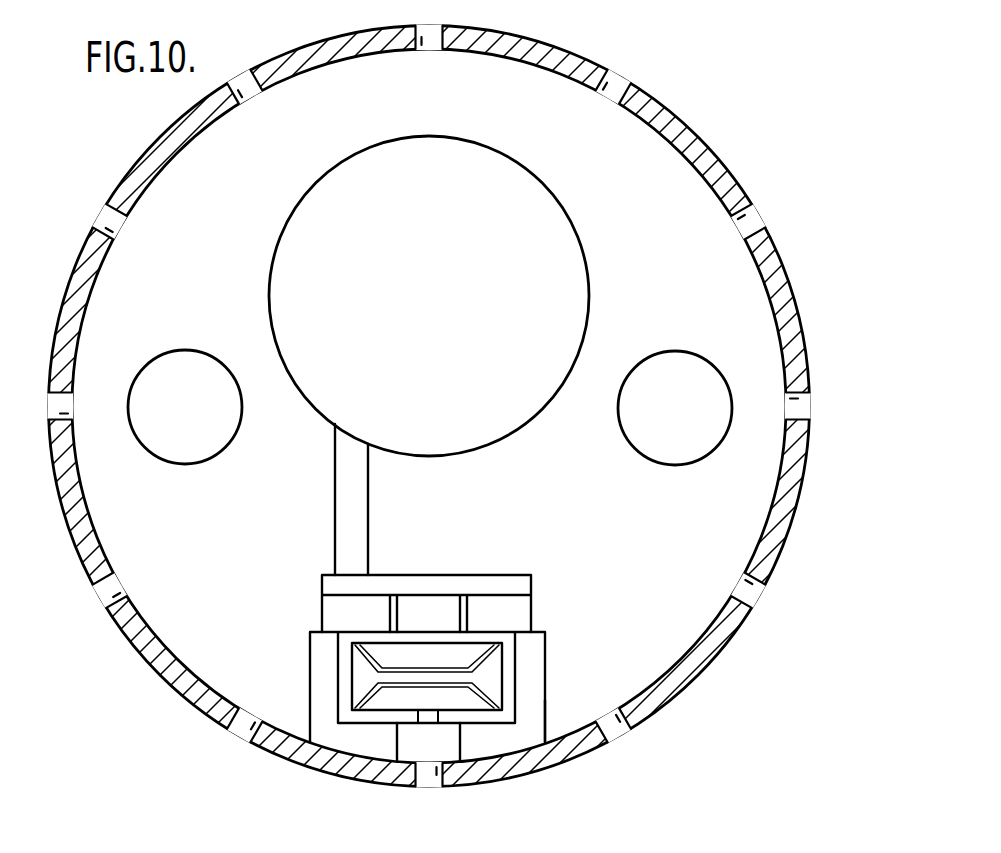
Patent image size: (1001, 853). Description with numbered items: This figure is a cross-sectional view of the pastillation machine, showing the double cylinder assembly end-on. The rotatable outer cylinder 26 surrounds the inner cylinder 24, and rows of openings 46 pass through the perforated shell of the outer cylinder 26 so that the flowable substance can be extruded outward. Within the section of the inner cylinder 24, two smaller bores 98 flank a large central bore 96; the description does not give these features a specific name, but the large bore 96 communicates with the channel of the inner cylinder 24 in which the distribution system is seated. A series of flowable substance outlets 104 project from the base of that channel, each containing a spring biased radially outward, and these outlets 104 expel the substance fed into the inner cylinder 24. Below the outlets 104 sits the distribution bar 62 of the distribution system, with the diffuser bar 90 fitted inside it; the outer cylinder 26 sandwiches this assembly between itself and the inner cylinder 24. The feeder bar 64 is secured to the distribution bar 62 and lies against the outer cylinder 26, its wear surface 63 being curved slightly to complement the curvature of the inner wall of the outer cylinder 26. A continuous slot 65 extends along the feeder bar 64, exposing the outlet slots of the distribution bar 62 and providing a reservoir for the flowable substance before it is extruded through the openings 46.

The inner cylinder 24 is at (578, 110).
The outer cylinder 26 is at (695, 148).
The openings 46 is at (802, 405).
The central bore 96 is at (372, 160).
The side passage 98 is at (158, 377).
The flowable substance outlets 104 is at (470, 617).
The distribution bar 62 is at (510, 695).
The diffuser bar 90 is at (352, 676).
The wear surface 63 is at (357, 743).
The continuous slot 65 is at (443, 743).
The feeder bar 64 is at (528, 733).